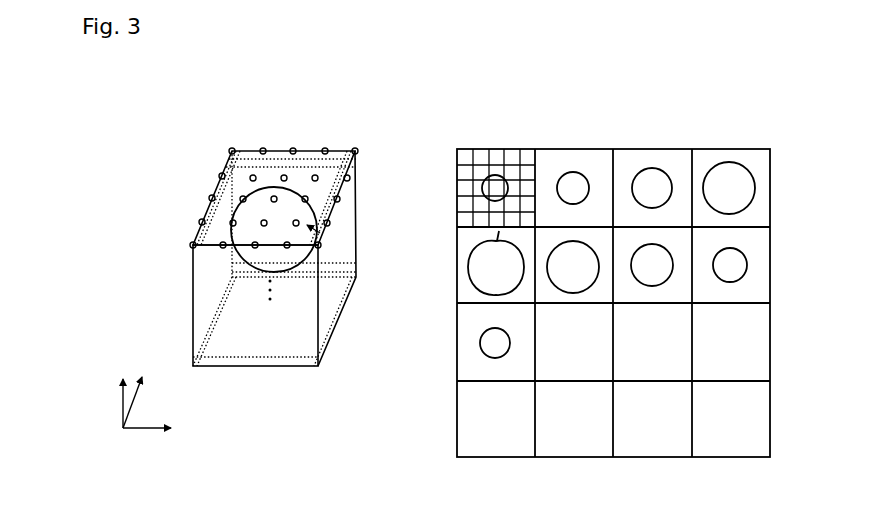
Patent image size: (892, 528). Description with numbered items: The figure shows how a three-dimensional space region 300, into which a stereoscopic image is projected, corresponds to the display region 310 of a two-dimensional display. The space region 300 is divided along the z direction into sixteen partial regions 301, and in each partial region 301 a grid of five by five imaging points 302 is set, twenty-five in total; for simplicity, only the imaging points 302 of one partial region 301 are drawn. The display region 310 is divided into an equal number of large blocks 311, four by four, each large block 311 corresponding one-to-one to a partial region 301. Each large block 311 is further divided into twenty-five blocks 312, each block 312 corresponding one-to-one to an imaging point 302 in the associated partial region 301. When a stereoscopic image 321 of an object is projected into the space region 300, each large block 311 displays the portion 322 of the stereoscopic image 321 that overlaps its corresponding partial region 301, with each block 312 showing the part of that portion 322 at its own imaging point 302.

The space region 300 is at (336, 402).
The partial region 301 is at (364, 171).
The imaging point 302 is at (264, 148).
The stereoscopic image 321 is at (301, 186).
The display region 310 is at (781, 445).
The large block 311 is at (580, 160).
The block 312 is at (463, 156).
The portion of the stereoscopic image 322 is at (661, 170).